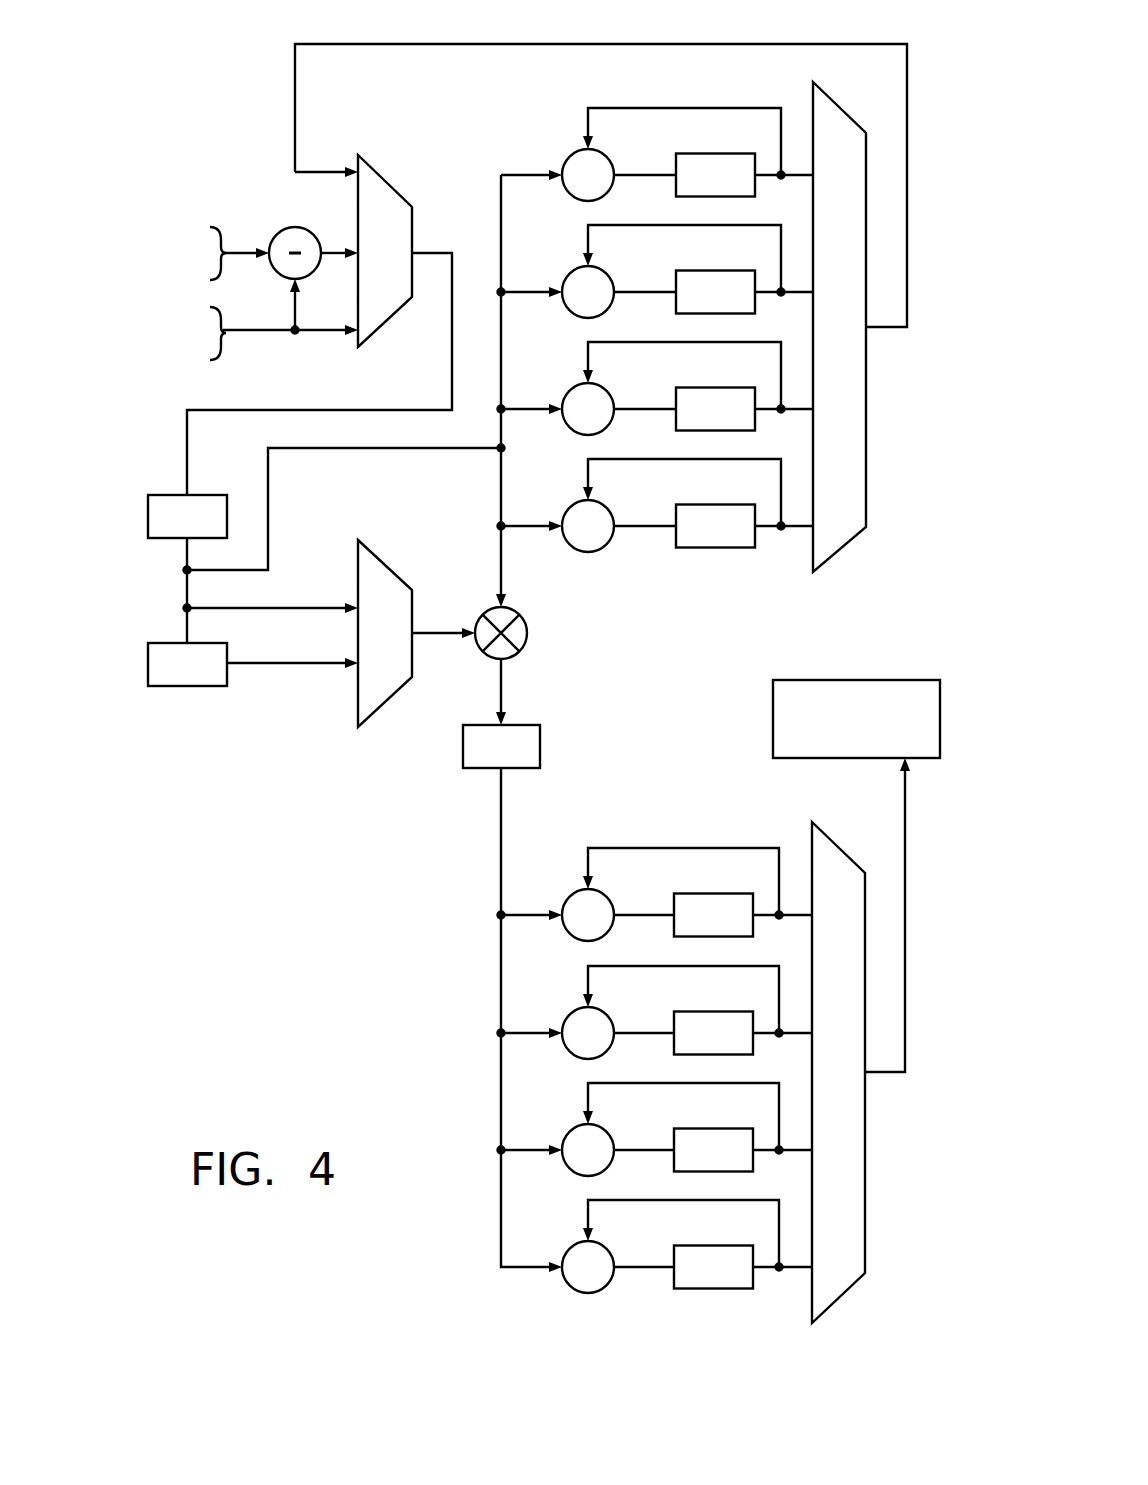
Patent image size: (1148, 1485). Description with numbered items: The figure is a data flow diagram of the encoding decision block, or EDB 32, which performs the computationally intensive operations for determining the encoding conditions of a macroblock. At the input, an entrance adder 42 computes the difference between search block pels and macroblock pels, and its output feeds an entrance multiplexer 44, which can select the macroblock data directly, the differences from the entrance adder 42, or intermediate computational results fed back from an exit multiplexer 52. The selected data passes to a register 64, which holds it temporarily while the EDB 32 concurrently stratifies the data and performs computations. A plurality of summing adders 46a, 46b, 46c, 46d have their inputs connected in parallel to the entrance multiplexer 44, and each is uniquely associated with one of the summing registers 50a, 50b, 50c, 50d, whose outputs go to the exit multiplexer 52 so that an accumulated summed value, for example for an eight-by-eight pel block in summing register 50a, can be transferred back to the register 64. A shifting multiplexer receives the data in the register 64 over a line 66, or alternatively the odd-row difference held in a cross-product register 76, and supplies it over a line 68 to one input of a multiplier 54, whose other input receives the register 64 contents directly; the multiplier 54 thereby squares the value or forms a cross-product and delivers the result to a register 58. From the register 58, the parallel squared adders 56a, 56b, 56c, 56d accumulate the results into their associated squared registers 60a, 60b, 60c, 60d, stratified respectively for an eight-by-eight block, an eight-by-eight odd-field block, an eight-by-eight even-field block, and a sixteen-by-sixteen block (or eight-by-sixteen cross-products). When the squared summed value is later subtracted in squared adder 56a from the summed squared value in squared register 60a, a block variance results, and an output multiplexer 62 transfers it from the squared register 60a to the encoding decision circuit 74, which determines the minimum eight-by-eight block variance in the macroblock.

The encoding decision block (EDB) 32 is at (205, 52).
The entrance adder 42 is at (280, 227).
The entrance multiplexer 44 is at (383, 170).
The summing adder 46a is at (611, 158).
The summing adder 46b is at (611, 275).
The summing adder 46c is at (611, 392).
The summing adder 46d is at (611, 509).
The summing register 50a is at (702, 153).
The summing register 50b is at (702, 270).
The summing register 50c is at (702, 387).
The summing register 50d is at (702, 504).
The exit multiplexer 52 is at (867, 441).
The multiplier 54 is at (527, 621).
The register 58 is at (463, 746).
The squared adder 56a is at (611, 898).
The squared adder 56b is at (611, 1016).
The squared adder 56c is at (611, 1133).
The squared adder 56d is at (611, 1250).
The squared register 60a is at (700, 893).
The squared register 60b is at (700, 1011).
The squared register 60c is at (700, 1128).
The squared register 60d is at (700, 1245).
The output multiplexer 62 is at (866, 1191).
The register 64 is at (148, 516).
The line 66 is at (304, 606).
The line 68 is at (436, 632).
The encoding decision circuit 74 is at (773, 720).
The cross-product register 76 is at (148, 664).